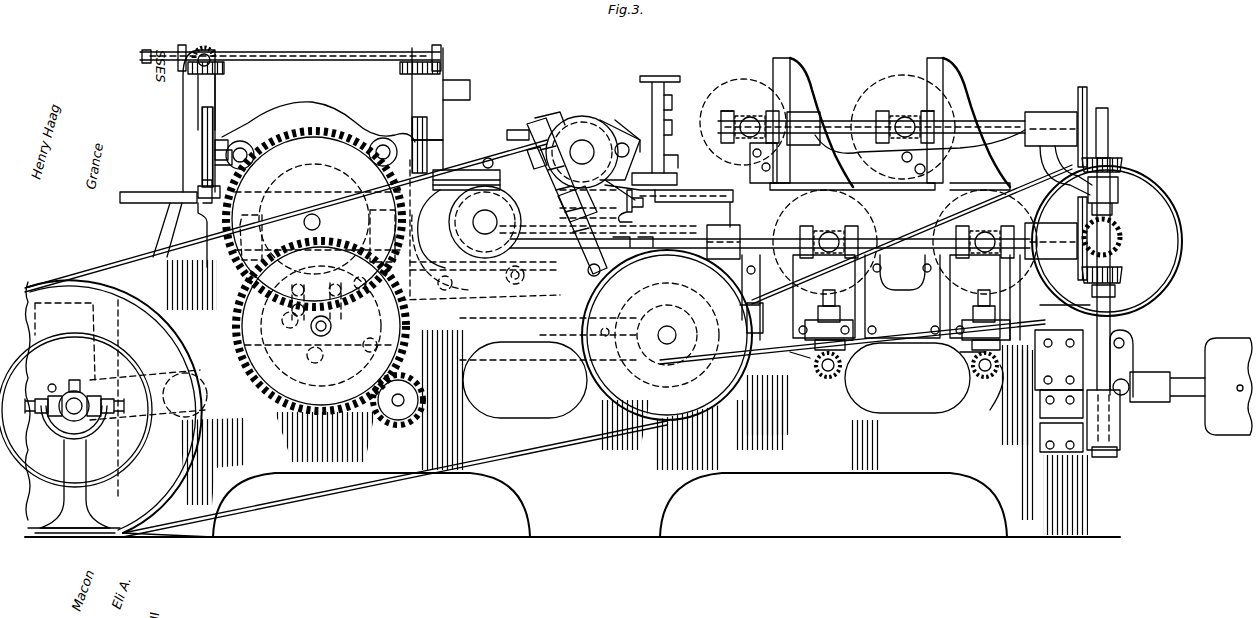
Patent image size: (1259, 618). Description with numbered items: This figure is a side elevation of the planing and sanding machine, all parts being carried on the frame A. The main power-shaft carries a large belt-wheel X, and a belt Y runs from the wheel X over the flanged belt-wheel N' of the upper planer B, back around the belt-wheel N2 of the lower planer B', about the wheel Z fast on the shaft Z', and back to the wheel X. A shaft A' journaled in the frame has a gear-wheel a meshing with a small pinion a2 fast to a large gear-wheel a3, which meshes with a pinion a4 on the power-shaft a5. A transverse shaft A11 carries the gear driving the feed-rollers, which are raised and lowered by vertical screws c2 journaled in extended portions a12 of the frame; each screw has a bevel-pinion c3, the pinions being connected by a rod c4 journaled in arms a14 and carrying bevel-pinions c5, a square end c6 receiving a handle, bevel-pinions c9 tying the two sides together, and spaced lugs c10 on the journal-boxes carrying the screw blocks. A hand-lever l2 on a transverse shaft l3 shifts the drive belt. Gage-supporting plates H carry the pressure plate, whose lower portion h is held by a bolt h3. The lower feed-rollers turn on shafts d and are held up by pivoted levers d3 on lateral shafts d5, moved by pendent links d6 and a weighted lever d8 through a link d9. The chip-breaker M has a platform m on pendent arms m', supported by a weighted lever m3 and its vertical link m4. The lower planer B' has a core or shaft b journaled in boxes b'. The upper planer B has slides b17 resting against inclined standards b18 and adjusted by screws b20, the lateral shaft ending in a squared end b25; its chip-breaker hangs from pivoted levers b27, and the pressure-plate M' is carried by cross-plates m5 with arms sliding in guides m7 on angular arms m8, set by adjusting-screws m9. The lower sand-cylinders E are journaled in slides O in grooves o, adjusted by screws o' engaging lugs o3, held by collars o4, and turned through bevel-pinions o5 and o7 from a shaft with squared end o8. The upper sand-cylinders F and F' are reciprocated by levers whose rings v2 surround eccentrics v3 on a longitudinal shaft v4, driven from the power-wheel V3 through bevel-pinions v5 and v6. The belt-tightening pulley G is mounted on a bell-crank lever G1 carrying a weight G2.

The frame A is at (572, 398).
The belt-wheel X is at (101, 406).
The belt Y is at (293, 502).
The wheel Z is at (606, 335).
The shaft Z' is at (685, 335).
The large gear-wheel a3 is at (321, 326).
The transverse shaft A11 is at (314, 219).
The chip-breaker M is at (317, 218).
The gear-wheel a is at (345, 140).
The shaft A' is at (328, 222).
The shafts d is at (311, 188).
The lateral shafts d5 is at (297, 288).
The pivoted levers d3 is at (335, 288).
The pendent links d6 is at (275, 314).
The link d9 is at (320, 344).
The weighted lever d8 is at (148, 395).
The small pinion a2 is at (367, 301).
The supporting-arms m' is at (379, 338).
The power-shaft a5 is at (395, 405).
The small pinion a4 is at (440, 390).
The upper planer B is at (593, 141).
The flanged belt-wheel N' is at (630, 146).
The flanged belt-wheel N2 is at (478, 255).
The lower planer B' is at (485, 275).
The core or shaft b is at (553, 184).
The pivoted levers b27 is at (526, 115).
The inclined standards b18 is at (520, 130).
The adjusting-screw b20 is at (531, 158).
The slides b17 is at (645, 212).
The squared end b25 is at (600, 254).
The lower portion h is at (465, 230).
The bolt h3 is at (490, 165).
The gage-supporting plates H is at (456, 159).
The platform m is at (477, 143).
The weighted lever m3 is at (590, 348).
The vertical link m4 is at (480, 293).
The cross-plates m5 is at (682, 165).
The guides m7 is at (650, 90).
The angular arms m8 is at (666, 150).
The adjusting-screws m9 is at (664, 82).
The pressure-plate M' is at (686, 200).
The vertical screws c2 is at (215, 135).
The bevel-pinion c3 is at (228, 70).
The rod c4 is at (325, 52).
The bevel-pinions c5 is at (186, 48).
The square end c6 is at (146, 47).
The bevel-pinions c9 is at (212, 50).
The lugs c10 is at (198, 155).
The extended portions a12 is at (459, 86).
The arms a14 is at (182, 80).
The hand-lever l2 is at (167, 235).
The transverse shaft l3 is at (198, 192).
The upper sand-cylinders F is at (871, 127).
The shaft F' is at (743, 122).
The rings v2 is at (890, 70).
The eccentrics v3 is at (740, 128).
The longitudinal shaft v4 is at (1025, 120).
The bevel-pinion v5 is at (1090, 136).
The bevel-pinion v6 is at (1120, 168).
The power-wheel V3 is at (1107, 274).
The lower sand-cylinders E is at (893, 176).
The slides O is at (770, 282).
The grooves o is at (928, 325).
The screws o' is at (915, 315).
The screw-threaded lugs o3 is at (907, 306).
The collars o4 is at (790, 360).
The bevel-pinion o5 is at (818, 368).
The bevel-pinion o7 is at (972, 360).
The squared end o8 is at (975, 372).
The belt-tightening pulley G is at (1103, 380).
The bell-crank lever G1 is at (1153, 402).
The weight G2 is at (1228, 386).
The boxes b' is at (548, 338).